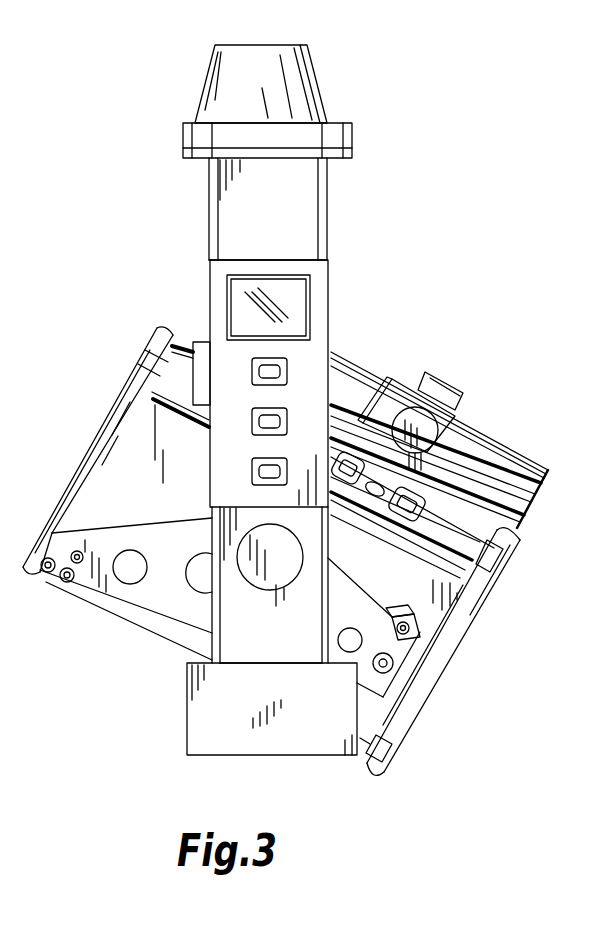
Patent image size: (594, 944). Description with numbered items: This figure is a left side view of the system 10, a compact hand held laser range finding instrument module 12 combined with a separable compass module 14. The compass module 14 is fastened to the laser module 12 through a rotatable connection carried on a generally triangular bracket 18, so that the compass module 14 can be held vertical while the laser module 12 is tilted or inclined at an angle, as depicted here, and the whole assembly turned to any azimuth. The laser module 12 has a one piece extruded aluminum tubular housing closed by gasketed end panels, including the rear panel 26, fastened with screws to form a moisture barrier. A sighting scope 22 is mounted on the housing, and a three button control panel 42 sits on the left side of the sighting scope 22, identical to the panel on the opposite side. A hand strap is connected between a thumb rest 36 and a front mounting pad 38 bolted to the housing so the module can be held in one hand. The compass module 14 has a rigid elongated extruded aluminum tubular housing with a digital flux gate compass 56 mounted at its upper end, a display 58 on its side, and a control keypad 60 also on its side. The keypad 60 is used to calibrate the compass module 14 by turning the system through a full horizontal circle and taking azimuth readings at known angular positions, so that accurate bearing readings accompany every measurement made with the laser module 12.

The system 10 is at (484, 271).
The laser range finding instrument module 12 is at (380, 708).
The compass module 14 is at (330, 217).
The triangular bracket 18 is at (167, 615).
The sighting scope 22 is at (486, 432).
The rear panel 26 is at (500, 586).
The thumb rest 36 is at (400, 628).
The front mounting pad 38 is at (25, 568).
The three button control panel 42 is at (435, 492).
The digital flux gate compass 56 is at (297, 80).
The display 58 is at (292, 298).
The control keypad 60 is at (207, 338).